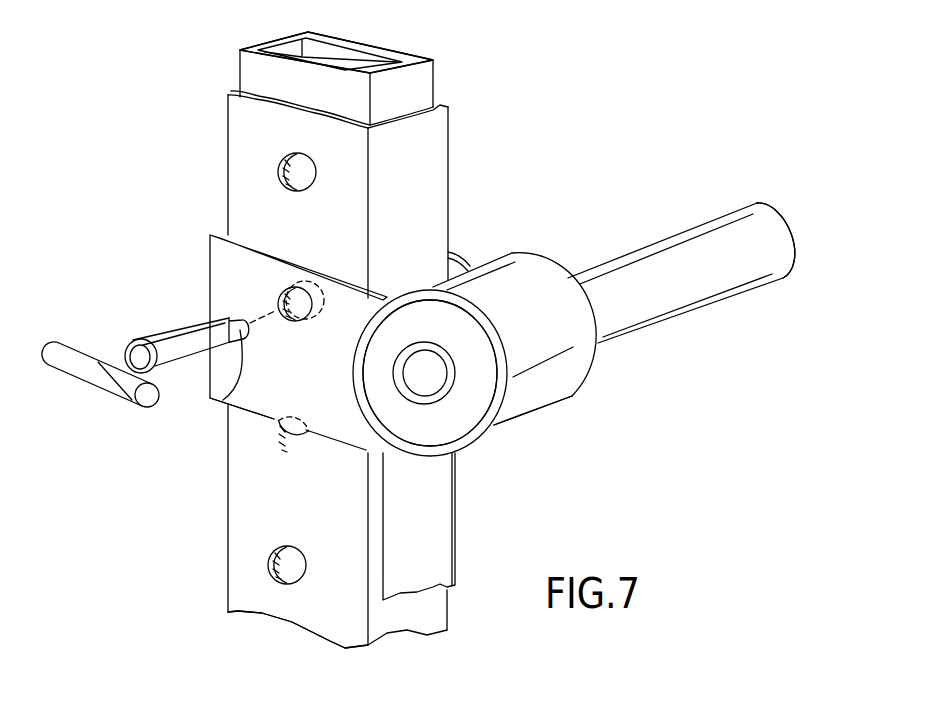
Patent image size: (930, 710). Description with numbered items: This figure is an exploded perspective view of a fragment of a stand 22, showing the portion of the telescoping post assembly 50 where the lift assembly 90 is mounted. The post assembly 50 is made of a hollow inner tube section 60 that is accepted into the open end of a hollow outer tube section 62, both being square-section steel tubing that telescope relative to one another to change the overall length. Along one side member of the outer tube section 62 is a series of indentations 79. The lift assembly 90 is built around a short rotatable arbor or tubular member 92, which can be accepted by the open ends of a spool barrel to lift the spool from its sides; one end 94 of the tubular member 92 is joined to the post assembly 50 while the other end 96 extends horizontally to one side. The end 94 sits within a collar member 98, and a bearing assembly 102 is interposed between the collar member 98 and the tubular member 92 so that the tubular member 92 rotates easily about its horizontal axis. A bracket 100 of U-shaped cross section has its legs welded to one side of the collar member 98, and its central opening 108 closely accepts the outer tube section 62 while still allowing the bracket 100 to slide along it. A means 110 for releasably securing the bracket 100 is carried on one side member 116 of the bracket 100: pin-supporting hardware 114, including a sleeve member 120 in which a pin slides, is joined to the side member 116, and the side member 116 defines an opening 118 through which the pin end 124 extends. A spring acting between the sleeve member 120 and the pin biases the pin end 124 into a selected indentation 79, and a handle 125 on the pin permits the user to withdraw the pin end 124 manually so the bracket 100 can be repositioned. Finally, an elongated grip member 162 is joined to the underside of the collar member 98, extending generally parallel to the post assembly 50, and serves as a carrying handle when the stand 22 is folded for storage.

The stand 22 is at (378, 47).
The inner tube section 60 is at (433, 78).
The telescoping post assembly 50 is at (227, 121).
The means for releasably securing 110 is at (102, 201).
The central opening 108 is at (246, 233).
The indentations 79 is at (275, 295).
The bracket 100 is at (455, 253).
The lift assembly 90 is at (528, 257).
The tubular member 92 is at (667, 253).
The end of tubular member 96 is at (800, 262).
The bearing assembly 102 is at (486, 382).
The collar member 98 is at (537, 418).
The end of tubular member 94 is at (433, 395).
The opening 118 is at (300, 306).
The pin-supporting hardware 114 is at (193, 320).
The sleeve member 120 is at (143, 338).
The handle 125 is at (100, 370).
The pin end 124 is at (223, 402).
The side member 116 is at (248, 413).
The grip member 162 is at (445, 530).
The outer tube section 62 is at (253, 603).